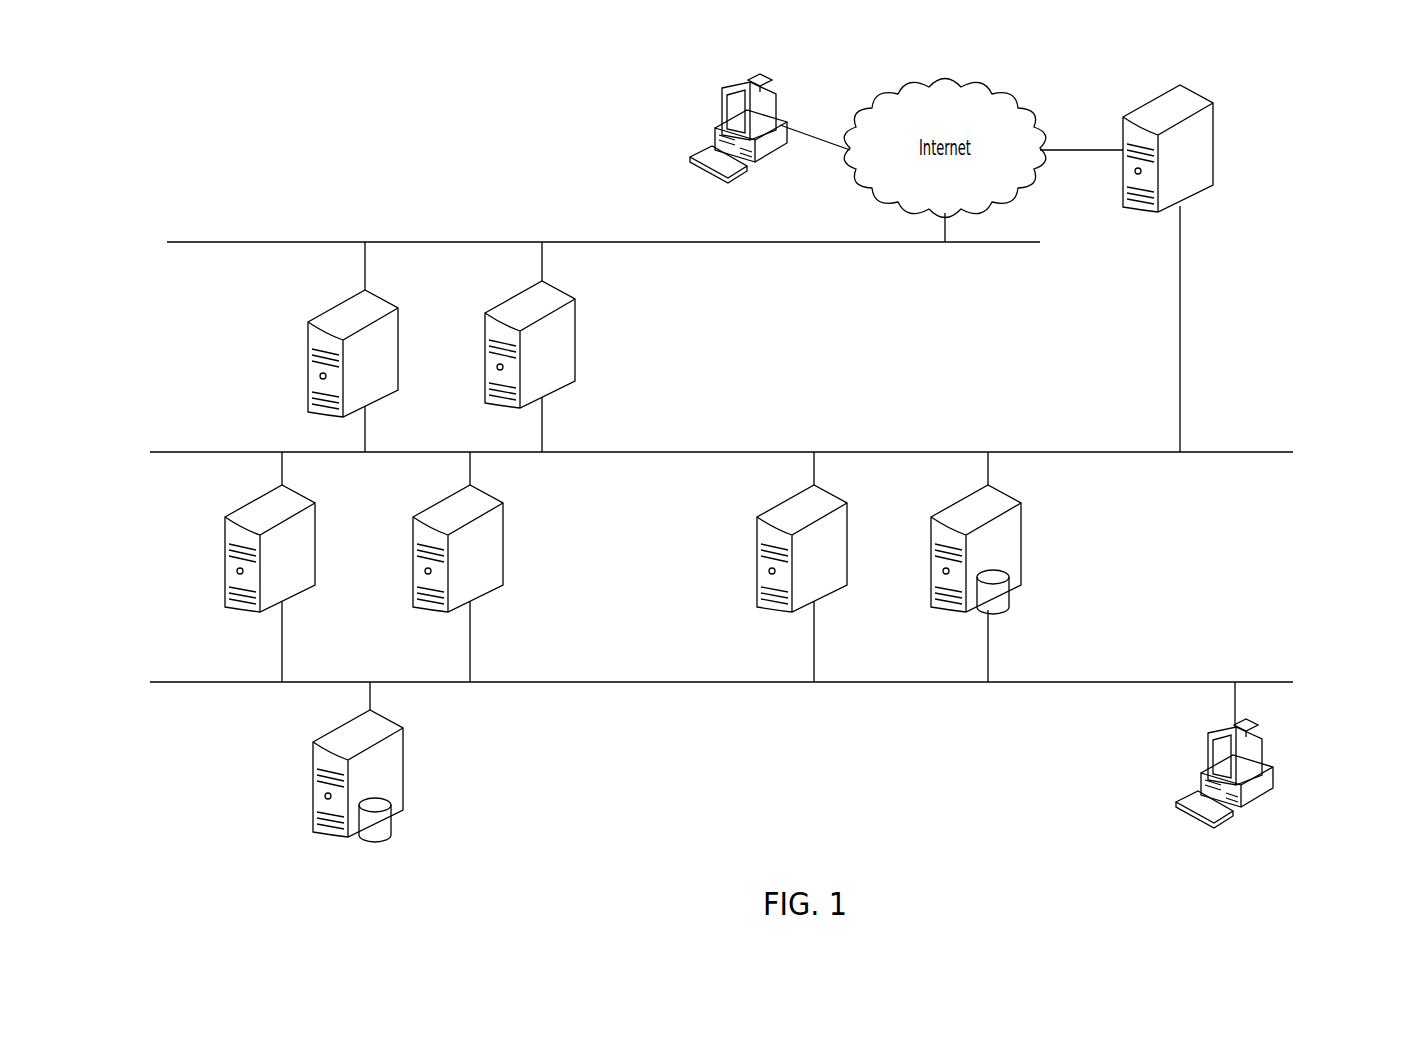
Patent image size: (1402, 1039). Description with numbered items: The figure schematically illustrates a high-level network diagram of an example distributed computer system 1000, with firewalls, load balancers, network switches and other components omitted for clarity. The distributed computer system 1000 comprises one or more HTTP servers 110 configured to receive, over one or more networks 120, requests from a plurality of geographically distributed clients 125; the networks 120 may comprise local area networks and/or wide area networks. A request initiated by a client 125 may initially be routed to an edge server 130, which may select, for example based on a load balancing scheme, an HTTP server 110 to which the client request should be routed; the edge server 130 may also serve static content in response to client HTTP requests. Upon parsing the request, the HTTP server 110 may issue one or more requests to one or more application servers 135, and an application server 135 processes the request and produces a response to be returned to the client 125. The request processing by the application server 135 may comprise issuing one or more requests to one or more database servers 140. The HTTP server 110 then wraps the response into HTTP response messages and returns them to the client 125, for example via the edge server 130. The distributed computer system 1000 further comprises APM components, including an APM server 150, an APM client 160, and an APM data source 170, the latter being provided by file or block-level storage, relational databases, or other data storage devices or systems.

The distributed computer system 1000 is at (1328, 137).
The HTTP server 110 is at (308, 362).
The network 120 is at (200, 242).
The client 125 is at (722, 106).
The edge server 130 is at (1214, 165).
The application server 135 is at (225, 556).
The database server 140 is at (313, 784).
The APM server 150 is at (757, 576).
The APM client 160 is at (1208, 752).
The APM data source 170 is at (1022, 549).